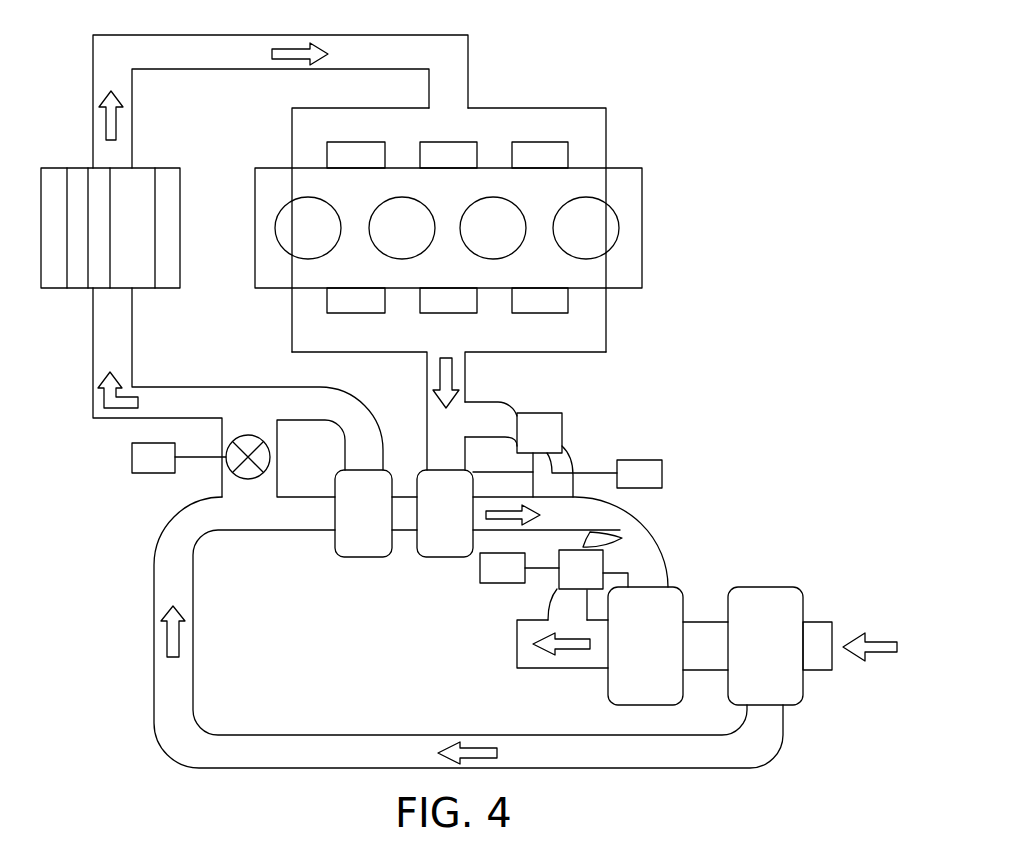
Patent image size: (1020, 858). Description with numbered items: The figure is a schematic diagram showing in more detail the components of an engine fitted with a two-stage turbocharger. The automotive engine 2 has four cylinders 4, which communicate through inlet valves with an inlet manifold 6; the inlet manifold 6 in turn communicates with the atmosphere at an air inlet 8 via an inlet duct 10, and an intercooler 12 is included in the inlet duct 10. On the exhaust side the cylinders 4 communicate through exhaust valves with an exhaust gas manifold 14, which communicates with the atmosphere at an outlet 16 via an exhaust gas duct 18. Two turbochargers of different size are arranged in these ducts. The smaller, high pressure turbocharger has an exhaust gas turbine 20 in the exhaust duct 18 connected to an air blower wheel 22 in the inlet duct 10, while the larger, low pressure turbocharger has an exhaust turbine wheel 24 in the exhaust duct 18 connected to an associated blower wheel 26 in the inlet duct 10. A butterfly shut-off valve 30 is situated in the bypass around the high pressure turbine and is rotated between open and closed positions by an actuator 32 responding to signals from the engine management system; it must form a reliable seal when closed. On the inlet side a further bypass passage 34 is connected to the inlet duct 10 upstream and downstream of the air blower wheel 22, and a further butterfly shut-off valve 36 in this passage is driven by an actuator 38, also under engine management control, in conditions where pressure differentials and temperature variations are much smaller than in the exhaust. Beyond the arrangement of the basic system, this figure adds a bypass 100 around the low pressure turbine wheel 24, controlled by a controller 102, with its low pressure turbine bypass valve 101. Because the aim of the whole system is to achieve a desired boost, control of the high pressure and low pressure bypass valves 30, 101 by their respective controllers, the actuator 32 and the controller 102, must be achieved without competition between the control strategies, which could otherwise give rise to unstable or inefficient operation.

The automotive engine 2 is at (642, 180).
The cylinders 4 is at (619, 230).
The inlet manifold 6 is at (606, 108).
The air inlet 8 is at (820, 671).
The inlet duct 10 is at (93, 350).
The intercooler 12 is at (180, 176).
The exhaust gas manifold 14 is at (606, 330).
The outlet 16 is at (517, 658).
The exhaust gas duct 18 is at (657, 522).
The exhaust gas turbine 20 is at (450, 557).
The air blower wheel 22 is at (370, 557).
The exhaust turbine wheel 24 is at (677, 587).
The blower wheel 26 is at (783, 587).
The butterfly shut-off valve 30 is at (562, 420).
The actuator 32 is at (662, 475).
The bypass passage 34 is at (281, 457).
The butterfly shut-off valve 36 is at (231, 468).
The actuator 38 is at (132, 457).
The bypass 100 is at (588, 585).
The low pressure turbine bypass valve 101 is at (585, 548).
The controller 102 is at (490, 587).